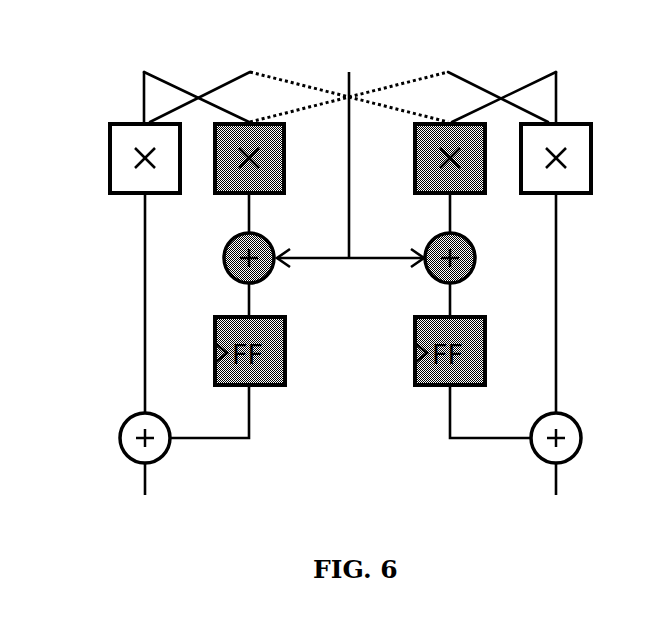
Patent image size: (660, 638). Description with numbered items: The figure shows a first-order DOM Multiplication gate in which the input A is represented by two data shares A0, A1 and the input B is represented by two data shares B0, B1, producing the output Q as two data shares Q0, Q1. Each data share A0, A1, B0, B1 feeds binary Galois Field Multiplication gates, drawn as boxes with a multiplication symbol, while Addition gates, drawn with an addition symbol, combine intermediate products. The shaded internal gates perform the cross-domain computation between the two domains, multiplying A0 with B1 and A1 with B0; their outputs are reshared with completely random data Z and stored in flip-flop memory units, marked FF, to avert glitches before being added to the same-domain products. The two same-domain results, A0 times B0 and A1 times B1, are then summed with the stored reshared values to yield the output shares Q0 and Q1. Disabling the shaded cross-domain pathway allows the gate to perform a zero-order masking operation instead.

The data share A0 is at (179, 113).
The data share B0 is at (299, 113).
The random data Z is at (350, 150).
The data share B1 is at (399, 113).
The data share A1 is at (521, 113).
The output share Q0 is at (145, 477).
The output share Q1 is at (556, 477).